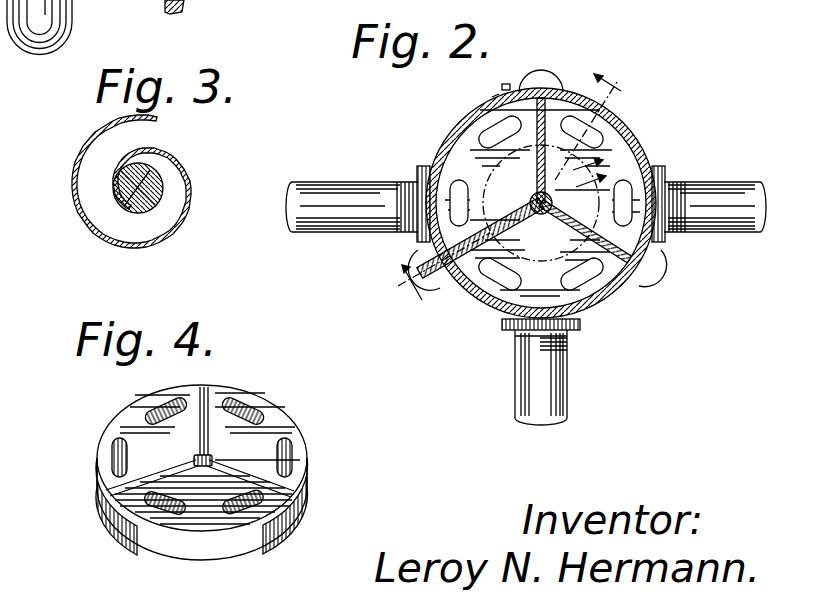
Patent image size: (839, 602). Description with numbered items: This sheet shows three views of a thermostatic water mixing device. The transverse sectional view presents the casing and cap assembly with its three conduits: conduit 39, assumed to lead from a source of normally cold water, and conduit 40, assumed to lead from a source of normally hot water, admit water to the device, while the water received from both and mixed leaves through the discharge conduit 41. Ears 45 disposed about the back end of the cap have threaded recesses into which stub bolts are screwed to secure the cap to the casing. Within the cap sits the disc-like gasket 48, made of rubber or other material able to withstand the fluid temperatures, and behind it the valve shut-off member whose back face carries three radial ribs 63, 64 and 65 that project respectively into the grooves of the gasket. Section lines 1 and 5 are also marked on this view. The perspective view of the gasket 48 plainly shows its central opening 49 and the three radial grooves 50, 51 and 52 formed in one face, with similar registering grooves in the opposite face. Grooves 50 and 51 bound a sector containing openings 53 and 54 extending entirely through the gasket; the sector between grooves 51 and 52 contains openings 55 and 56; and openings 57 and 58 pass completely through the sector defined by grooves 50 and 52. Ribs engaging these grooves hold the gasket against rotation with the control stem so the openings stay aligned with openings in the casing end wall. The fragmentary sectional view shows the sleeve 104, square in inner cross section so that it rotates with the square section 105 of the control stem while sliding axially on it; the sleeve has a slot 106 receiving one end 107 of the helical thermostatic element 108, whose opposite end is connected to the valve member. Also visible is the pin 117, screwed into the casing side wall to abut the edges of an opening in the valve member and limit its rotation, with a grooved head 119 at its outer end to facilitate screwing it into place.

In FIG. 2, the section line 1- 1 is at (511, 188).
In FIG. 2, the section line 5- 5 is at (583, 184).
In FIG. 2, the conduit 39 is at (352, 182).
In FIG. 2, the conduit 40 is at (733, 182).
In FIG. 2, the discharge conduit 41 is at (560, 387).
In FIG. 2, the ears 45 is at (548, 75).
In FIG. 4, the gasket 48 is at (294, 415).
In FIG. 4, the central opening 49 is at (211, 458).
In FIG. 4, the radial groove 50 is at (183, 421).
In FIG. 4, the radial groove 51 is at (250, 480).
In FIG. 4, the radial groove 52 is at (152, 480).
In FIG. 2, the opening 53 is at (593, 130).
In FIG. 4, the opening 53 is at (245, 407).
In FIG. 2, the opening 54 is at (628, 182).
In FIG. 4, the opening 54 is at (293, 456).
In FIG. 2, the opening 55 is at (608, 297).
In FIG. 4, the opening 55 is at (253, 510).
In FIG. 2, the opening 56 is at (490, 291).
In FIG. 4, the opening 56 is at (167, 508).
In FIG. 2, the opening 57 is at (455, 182).
In FIG. 4, the opening 57 is at (111, 449).
In FIG. 2, the opening 58 is at (482, 127).
In FIG. 4, the opening 58 is at (168, 404).
In FIG. 2, the radial rib 63 is at (521, 150).
In FIG. 2, the radial rib 64 is at (573, 232).
In FIG. 2, the radial rib 65 is at (480, 232).
In FIG. 3, the sleeve 104 is at (118, 200).
In FIG. 3, the square section 105 is at (163, 176).
In FIG. 3, the slot 106 is at (113, 175).
In FIG. 3, the end of thermostatic element 107 is at (140, 164).
In FIG. 3, the helical thermostatic element 108 is at (177, 222).
In FIG. 2, the pin 117 is at (498, 96).
In FIG. 2, the grooved head 119 is at (508, 88).